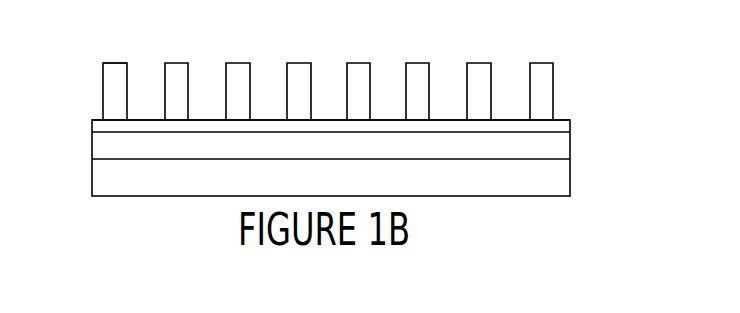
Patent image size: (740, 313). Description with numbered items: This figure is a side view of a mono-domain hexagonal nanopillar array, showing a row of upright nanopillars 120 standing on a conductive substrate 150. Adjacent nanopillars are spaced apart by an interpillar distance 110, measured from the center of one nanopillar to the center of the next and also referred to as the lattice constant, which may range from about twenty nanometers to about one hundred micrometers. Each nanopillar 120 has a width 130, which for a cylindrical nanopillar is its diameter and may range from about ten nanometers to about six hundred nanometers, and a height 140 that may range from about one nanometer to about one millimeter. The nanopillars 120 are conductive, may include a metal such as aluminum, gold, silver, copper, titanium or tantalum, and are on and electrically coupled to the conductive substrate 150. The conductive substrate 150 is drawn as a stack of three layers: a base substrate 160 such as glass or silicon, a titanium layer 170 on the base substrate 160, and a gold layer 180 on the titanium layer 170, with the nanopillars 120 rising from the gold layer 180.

The interpillar distance 110 is at (542, 58).
The nanopillar 120 is at (300, 71).
The width 130 is at (127, 58).
The height 140 is at (558, 64).
The conductive substrate 150 is at (88, 121).
The base substrate 160 is at (565, 176).
The titanium layer 170 is at (565, 146).
The gold layer 180 is at (566, 126).